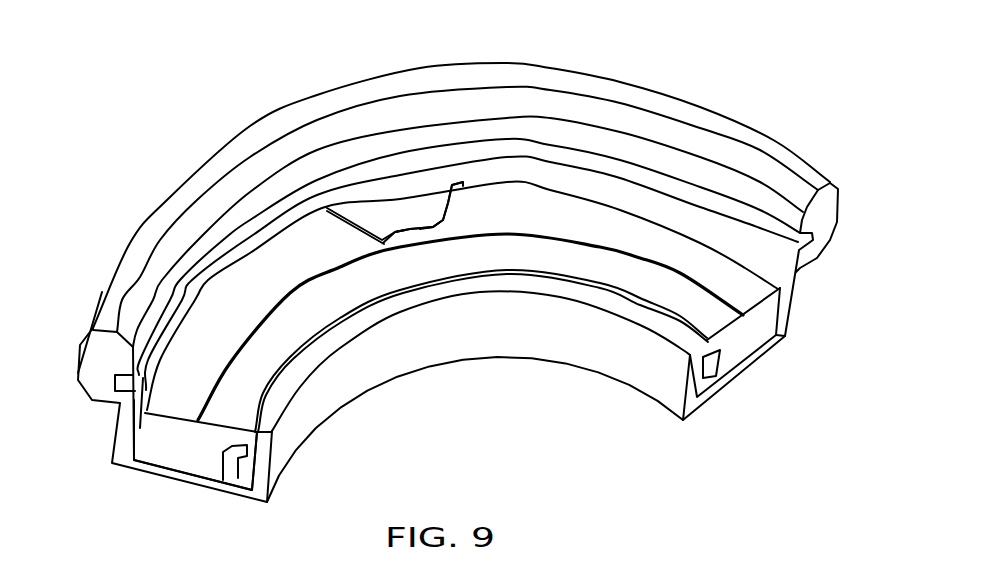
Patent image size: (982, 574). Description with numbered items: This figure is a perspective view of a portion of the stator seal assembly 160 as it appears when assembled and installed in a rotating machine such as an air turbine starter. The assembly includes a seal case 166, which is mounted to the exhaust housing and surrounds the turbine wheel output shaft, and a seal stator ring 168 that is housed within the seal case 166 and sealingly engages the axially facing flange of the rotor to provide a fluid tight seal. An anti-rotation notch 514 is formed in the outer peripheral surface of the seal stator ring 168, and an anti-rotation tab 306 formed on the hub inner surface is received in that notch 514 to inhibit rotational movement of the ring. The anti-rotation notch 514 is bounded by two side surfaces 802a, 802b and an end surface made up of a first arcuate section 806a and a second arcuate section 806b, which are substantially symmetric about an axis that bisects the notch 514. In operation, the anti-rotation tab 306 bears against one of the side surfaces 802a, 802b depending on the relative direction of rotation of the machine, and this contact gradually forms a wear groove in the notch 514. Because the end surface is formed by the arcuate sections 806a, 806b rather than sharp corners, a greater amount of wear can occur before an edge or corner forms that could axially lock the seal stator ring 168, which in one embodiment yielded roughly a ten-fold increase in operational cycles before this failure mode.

The face seal assembly 160 is at (170, 140).
The seal case 166 is at (650, 90).
The seal stator ring 168 is at (157, 467).
The anti-rotation tab 306 is at (403, 200).
The side surface 802a is at (460, 197).
The side surface 802b is at (356, 216).
The first arcuate section 806a is at (449, 229).
The second arcuate section 806b is at (391, 236).
The anti-rotation notch 514 is at (433, 243).